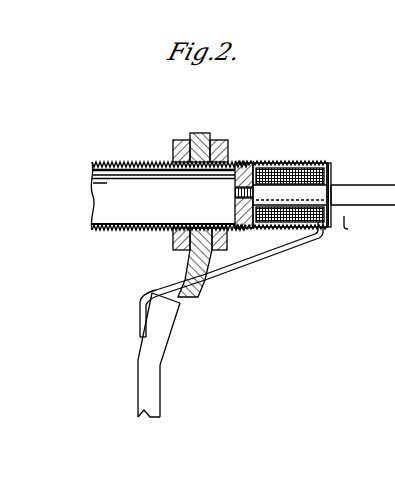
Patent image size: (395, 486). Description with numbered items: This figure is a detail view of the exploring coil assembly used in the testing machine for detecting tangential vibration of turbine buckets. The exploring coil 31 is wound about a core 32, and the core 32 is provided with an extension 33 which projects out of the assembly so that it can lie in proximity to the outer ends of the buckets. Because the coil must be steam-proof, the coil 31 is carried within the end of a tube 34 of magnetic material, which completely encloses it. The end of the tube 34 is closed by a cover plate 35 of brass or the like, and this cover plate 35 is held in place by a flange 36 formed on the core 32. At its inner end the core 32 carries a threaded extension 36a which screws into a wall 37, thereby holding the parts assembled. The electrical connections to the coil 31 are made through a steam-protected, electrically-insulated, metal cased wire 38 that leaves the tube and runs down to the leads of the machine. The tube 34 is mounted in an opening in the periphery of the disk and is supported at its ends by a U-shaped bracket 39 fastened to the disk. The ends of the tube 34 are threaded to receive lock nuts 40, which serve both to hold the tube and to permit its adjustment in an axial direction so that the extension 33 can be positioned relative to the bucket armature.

The exploring coil 31 is at (288, 164).
The core 32 is at (263, 185).
The extension 33 is at (354, 190).
The tube 34 is at (241, 163).
The cover plate 35 is at (330, 172).
The flange 36 is at (346, 222).
The threaded extension 36a is at (237, 197).
The wall 37 is at (227, 183).
The metal cased wire 38 is at (211, 277).
The U-shaped bracket 39 is at (170, 338).
The lock nut 40 is at (224, 140).